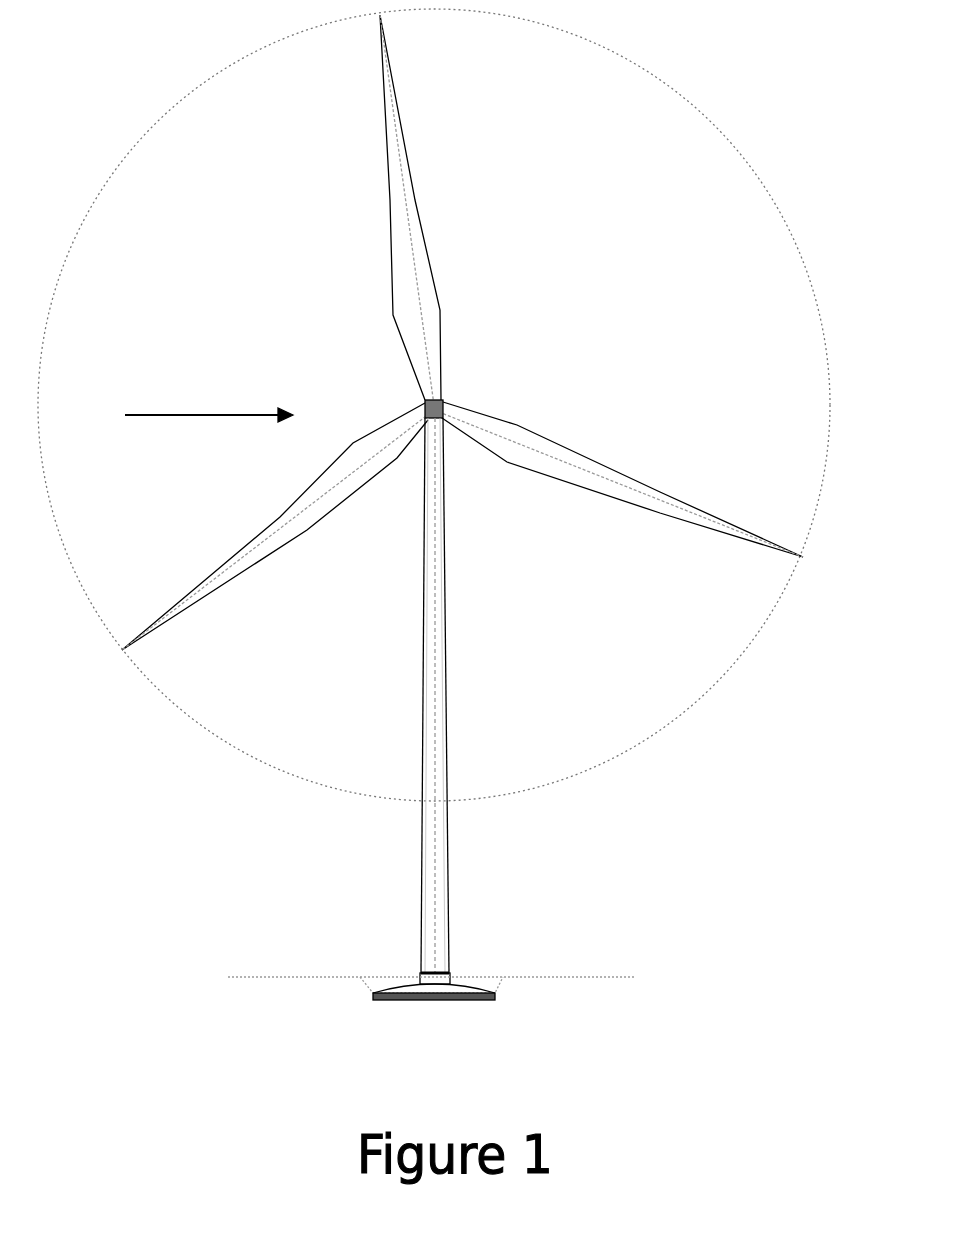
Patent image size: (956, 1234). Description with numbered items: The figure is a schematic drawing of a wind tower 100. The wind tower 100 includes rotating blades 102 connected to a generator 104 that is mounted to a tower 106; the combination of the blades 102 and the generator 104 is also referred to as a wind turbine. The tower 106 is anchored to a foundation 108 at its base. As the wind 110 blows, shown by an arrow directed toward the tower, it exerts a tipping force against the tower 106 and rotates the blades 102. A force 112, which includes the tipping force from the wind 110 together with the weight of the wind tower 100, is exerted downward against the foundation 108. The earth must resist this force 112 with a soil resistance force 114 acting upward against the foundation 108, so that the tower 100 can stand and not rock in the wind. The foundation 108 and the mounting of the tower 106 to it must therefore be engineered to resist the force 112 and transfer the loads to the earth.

The wind tower 100 is at (118, 800).
The rotating blades 102 is at (402, 140).
The generator 104 is at (445, 401).
The tower 106 is at (447, 836).
The foundation 108 is at (475, 987).
The wind 110 is at (188, 419).
The force 112 is at (403, 996).
The soil resistance force 114 is at (468, 999).